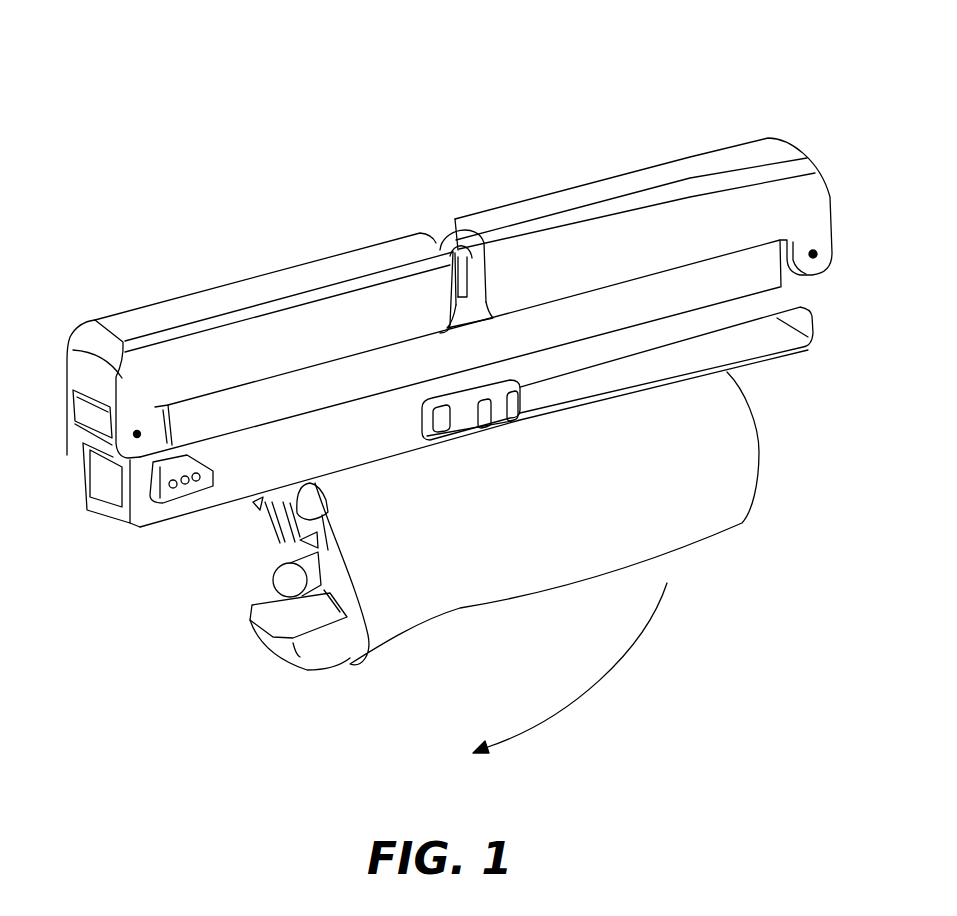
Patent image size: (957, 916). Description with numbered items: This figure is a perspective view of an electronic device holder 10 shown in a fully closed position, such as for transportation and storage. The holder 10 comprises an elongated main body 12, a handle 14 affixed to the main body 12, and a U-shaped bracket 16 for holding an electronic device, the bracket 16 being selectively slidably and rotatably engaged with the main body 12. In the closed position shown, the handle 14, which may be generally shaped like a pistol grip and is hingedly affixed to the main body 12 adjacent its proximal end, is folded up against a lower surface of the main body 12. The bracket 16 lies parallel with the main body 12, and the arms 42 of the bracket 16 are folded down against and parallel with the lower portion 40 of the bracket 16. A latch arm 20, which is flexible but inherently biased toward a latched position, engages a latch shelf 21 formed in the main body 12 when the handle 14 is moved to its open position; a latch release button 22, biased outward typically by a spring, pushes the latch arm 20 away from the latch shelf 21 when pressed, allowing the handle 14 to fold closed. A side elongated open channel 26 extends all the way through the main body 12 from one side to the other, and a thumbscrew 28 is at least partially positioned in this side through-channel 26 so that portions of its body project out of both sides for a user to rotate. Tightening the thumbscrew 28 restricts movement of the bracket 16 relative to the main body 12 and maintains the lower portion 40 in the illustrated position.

The electronic device holder 10 is at (201, 100).
The elongated main body 12 is at (232, 490).
The handle 14 is at (738, 468).
The U-shaped bracket 16 is at (47, 360).
The latch arm 20 is at (295, 578).
The latch shelf 21 is at (108, 513).
The latch release button 22 is at (173, 489).
The side elongated open channel 26 is at (737, 340).
The thumbscrew 28 is at (463, 423).
The lower portion of the bracket 40 is at (242, 397).
The arms of the bracket 42 is at (313, 268).